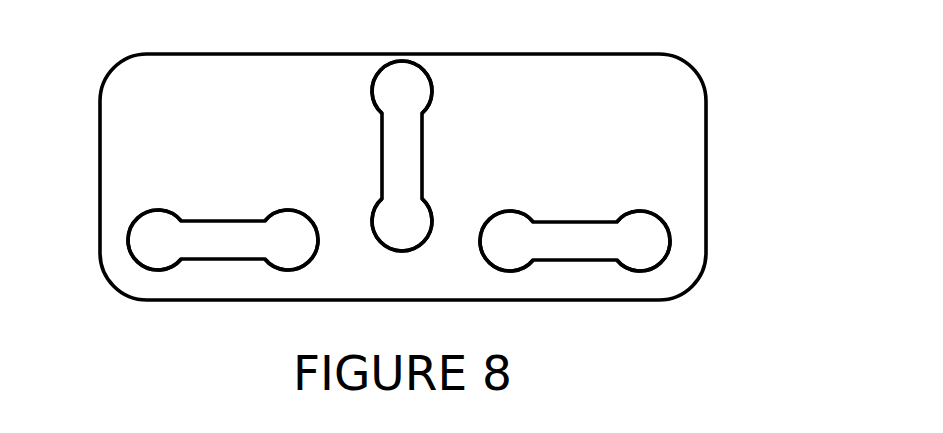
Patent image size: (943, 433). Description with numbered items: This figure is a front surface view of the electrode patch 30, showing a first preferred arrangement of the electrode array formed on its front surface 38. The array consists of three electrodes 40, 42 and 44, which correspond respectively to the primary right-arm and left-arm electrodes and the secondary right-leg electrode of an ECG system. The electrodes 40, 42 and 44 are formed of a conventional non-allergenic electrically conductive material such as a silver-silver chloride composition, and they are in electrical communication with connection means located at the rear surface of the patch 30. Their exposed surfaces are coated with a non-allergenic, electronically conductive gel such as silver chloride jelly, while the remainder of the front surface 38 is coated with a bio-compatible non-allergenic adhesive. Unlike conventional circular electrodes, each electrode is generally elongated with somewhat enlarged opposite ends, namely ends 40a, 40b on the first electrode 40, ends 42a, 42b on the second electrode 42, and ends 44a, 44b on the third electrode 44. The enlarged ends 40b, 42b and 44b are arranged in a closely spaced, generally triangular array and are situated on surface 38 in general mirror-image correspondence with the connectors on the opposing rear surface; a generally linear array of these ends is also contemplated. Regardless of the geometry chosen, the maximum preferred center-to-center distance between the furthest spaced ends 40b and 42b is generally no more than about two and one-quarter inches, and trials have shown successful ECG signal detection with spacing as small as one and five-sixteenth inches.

The electrode patch 30 is at (707, 156).
The front surface 38 is at (630, 78).
The electrode 40 is at (585, 220).
The enlarged end of electrode 40 40a is at (507, 220).
The enlarged end of electrode 40 40b is at (647, 245).
The electrode 42 is at (243, 218).
The enlarged end of electrode 42 42a is at (293, 253).
The enlarged end of electrode 42 42b is at (150, 237).
The electrode 44 is at (422, 163).
The enlarged end of electrode 44 44a is at (388, 228).
The enlarged end of electrode 44 44b is at (402, 70).